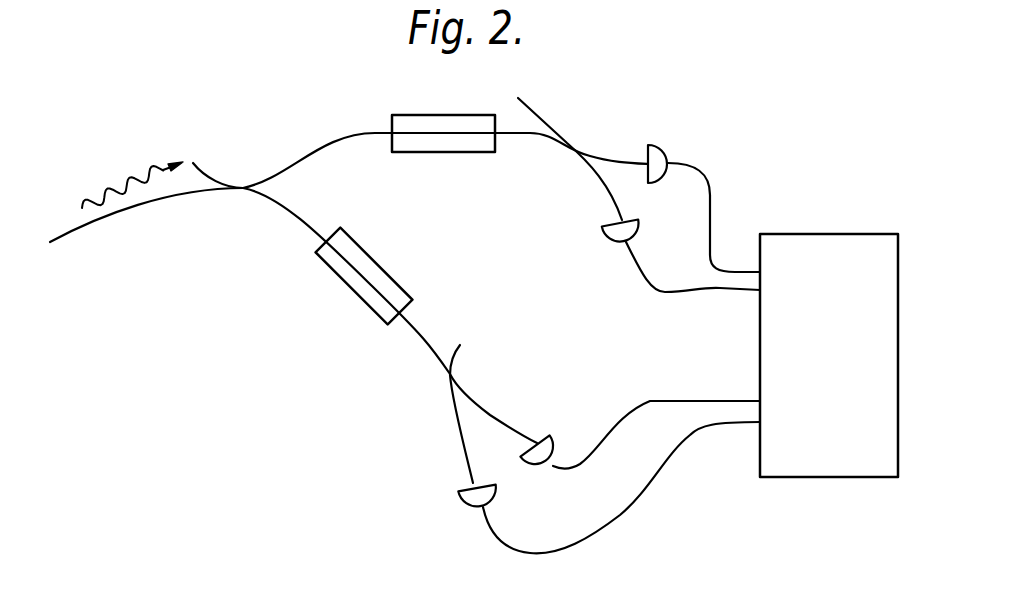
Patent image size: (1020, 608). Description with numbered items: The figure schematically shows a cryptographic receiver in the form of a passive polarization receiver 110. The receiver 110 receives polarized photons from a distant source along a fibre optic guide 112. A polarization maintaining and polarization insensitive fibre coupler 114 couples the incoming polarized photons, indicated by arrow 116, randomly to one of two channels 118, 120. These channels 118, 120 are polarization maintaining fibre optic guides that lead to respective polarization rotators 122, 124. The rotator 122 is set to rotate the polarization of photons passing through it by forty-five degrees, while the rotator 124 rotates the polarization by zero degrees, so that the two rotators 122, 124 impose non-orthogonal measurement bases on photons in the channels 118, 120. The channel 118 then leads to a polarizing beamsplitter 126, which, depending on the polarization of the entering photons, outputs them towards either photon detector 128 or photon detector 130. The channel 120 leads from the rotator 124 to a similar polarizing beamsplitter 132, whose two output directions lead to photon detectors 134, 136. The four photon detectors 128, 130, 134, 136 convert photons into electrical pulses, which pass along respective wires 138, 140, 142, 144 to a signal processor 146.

The passive polarization receiver 110 is at (328, 413).
The fibre optic guide 112 is at (117, 208).
The fibre coupler 114 is at (242, 187).
The incoming polarized photons 116 is at (110, 188).
The channel 118 is at (311, 156).
The channel 120 is at (293, 212).
The polarization rotator 122 is at (403, 115).
The polarization rotator 124 is at (348, 290).
The polarizing beamsplitter 126 is at (570, 143).
The photon detector 128 is at (665, 147).
The photon detector 130 is at (607, 245).
The polarizing beamsplitter 132 is at (452, 377).
The photon detector 134 is at (558, 430).
The photon detector 136 is at (462, 508).
The wire 138 is at (712, 192).
The wire 140 is at (660, 293).
The wire 142 is at (628, 407).
The wire 144 is at (537, 555).
The signal processor 146 is at (788, 478).